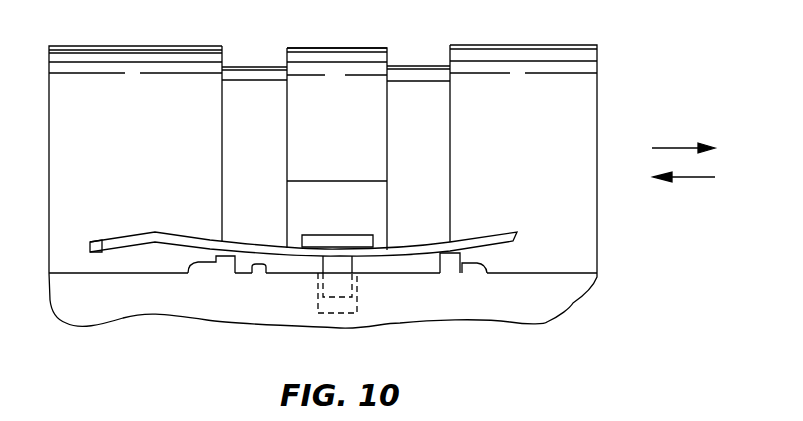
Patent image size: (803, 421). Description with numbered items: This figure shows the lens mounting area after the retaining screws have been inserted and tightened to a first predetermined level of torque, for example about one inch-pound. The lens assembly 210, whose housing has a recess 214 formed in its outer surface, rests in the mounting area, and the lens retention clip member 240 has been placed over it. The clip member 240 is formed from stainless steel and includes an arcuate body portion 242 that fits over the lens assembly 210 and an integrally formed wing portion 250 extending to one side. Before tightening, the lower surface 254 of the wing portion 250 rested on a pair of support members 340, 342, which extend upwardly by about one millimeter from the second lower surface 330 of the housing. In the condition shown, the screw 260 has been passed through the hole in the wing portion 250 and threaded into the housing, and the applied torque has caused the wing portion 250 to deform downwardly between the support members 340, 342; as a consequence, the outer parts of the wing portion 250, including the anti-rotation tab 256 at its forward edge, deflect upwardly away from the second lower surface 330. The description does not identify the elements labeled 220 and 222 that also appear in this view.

The lens assembly 210 is at (542, 45).
The recess 214 is at (253, 66).
The first direction of motion 220 is at (677, 147).
The second direction of motion 222 is at (695, 178).
The lens retention clip member 240 is at (327, 40).
The arcuate body portion 242 is at (367, 47).
The wing portion 250 is at (488, 230).
The lower surface 254 is at (410, 258).
The anti-rotation tab 256 is at (117, 232).
The screw 260 is at (337, 233).
The second lower surface 330 is at (252, 273).
The support member 340 is at (192, 265).
The support member 342 is at (482, 267).